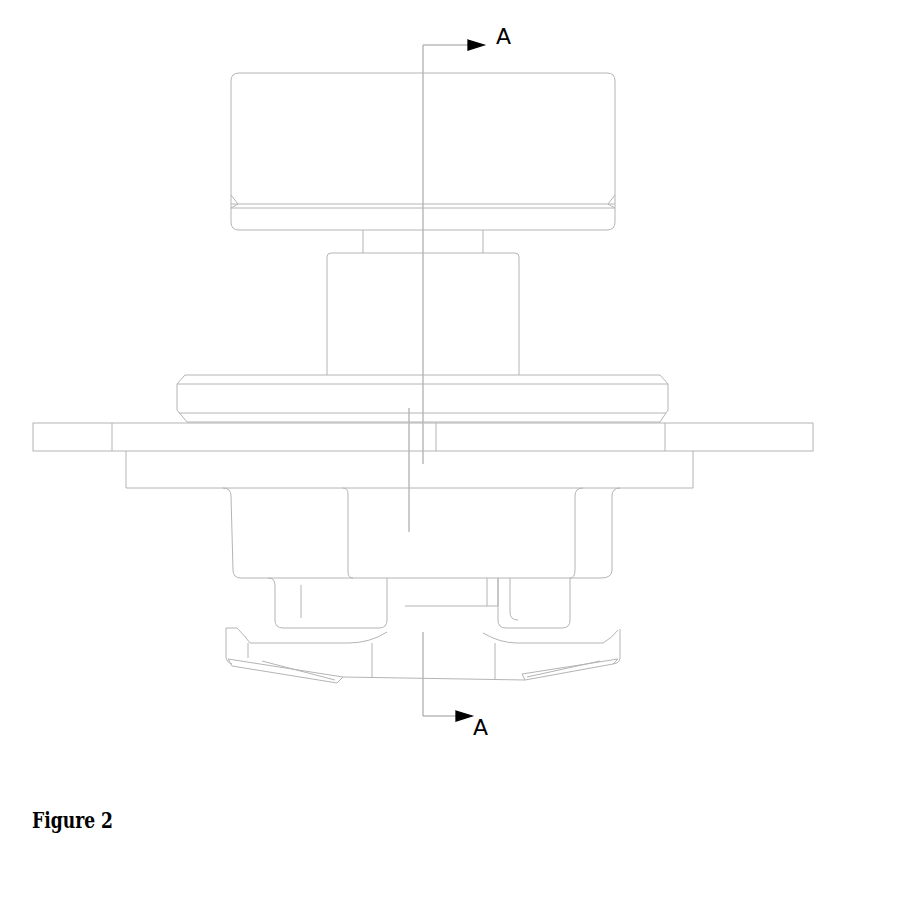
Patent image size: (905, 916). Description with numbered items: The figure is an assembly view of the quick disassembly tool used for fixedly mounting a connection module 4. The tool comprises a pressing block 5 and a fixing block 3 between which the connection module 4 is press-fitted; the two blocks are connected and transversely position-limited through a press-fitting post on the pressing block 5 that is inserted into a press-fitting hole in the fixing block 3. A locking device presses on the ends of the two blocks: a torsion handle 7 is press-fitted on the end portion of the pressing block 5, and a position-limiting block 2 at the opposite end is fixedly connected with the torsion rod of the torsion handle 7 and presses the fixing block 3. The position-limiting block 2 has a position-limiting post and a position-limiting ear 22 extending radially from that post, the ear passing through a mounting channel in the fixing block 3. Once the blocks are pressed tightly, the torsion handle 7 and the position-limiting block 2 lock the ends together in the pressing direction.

The torsion handle 7 is at (595, 118).
The pressing block 5 is at (493, 325).
The connection module 4 is at (742, 434).
The fixing block 3 is at (650, 468).
The position-limiting block 2 is at (455, 657).
The position-limiting ear 22 is at (565, 648).